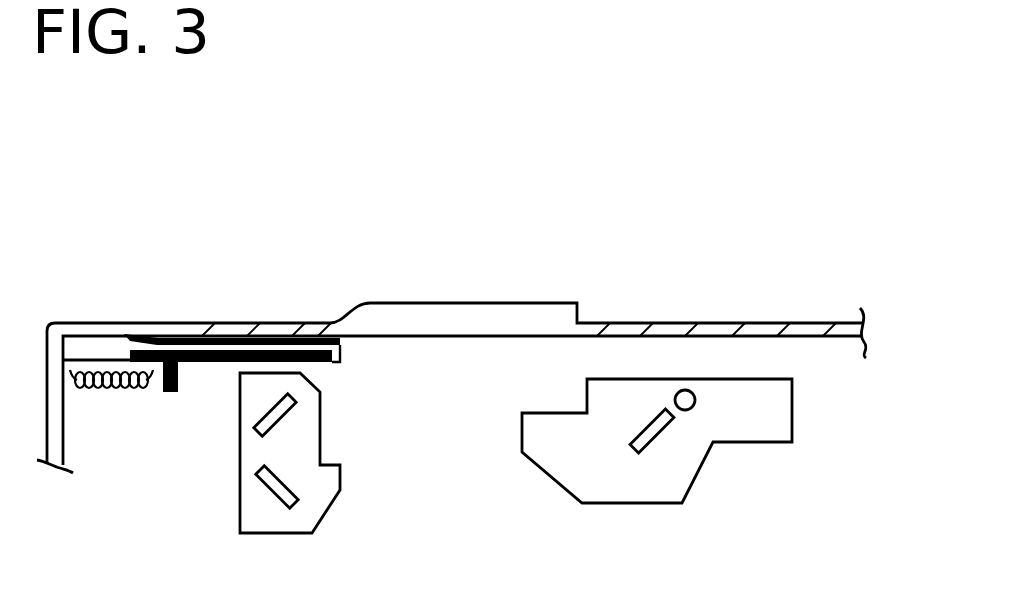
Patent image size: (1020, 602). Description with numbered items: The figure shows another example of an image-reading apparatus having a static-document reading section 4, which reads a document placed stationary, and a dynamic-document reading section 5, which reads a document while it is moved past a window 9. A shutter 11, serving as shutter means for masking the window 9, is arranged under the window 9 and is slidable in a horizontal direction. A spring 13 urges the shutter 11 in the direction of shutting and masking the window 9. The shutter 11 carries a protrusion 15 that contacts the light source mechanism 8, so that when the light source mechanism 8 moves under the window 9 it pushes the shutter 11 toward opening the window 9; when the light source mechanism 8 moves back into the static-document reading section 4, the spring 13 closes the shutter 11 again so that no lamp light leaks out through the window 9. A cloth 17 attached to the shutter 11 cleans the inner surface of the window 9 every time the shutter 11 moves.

The static-document reading section 4 is at (697, 312).
The dynamic-document reading section 5 is at (208, 311).
The light source mechanism 8 is at (735, 432).
The window 9 is at (247, 333).
The shutter 11 is at (132, 350).
The spring 13 is at (108, 390).
The protrusion 15 is at (187, 382).
The cloth 17 is at (330, 333).